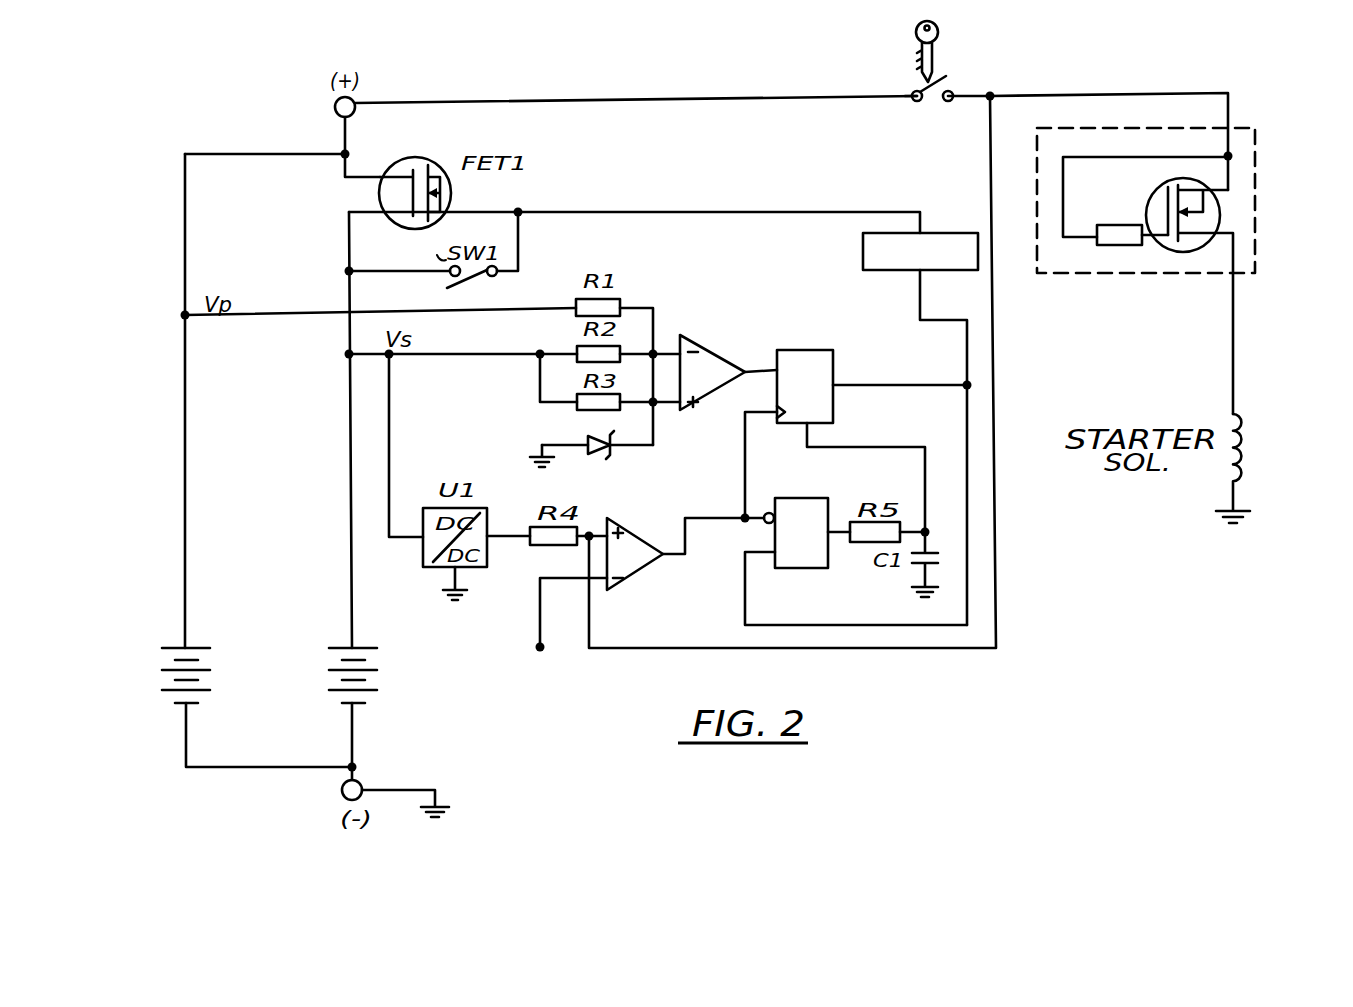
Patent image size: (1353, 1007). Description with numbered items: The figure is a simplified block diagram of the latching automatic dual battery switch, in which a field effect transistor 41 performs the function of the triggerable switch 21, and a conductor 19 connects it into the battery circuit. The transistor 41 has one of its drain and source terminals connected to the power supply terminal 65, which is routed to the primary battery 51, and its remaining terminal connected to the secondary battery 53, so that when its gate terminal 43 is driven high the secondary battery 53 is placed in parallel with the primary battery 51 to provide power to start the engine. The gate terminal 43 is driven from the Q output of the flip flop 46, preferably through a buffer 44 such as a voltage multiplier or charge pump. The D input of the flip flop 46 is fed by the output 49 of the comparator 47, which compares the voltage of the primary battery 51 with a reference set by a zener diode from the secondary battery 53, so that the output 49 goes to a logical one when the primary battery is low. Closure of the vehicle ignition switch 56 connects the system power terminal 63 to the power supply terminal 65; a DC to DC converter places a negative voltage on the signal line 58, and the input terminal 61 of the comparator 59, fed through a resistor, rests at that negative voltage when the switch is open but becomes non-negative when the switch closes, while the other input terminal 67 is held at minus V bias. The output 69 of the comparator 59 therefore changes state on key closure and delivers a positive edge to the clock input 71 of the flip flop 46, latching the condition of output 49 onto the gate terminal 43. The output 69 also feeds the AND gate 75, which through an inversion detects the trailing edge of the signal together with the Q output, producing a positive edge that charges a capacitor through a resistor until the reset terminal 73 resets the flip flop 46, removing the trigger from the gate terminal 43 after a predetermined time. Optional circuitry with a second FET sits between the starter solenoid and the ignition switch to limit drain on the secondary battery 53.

The conductor to secondary battery and FET1 source 19 is at (348, 237).
The triggerable switch 21 is at (591, 436).
The field effect transistor 41 is at (432, 162).
The gate terminal 43 is at (455, 209).
The buffer 44 is at (862, 240).
The flip flop 46 is at (833, 353).
The comparator 47 is at (697, 338).
The comparator output 49 is at (750, 368).
The primary battery 51 is at (212, 682).
The secondary battery 53 is at (380, 682).
The vehicle ignition switch 56 is at (950, 84).
The signal line 58 is at (508, 540).
The comparator 59 is at (640, 566).
The input terminal 61 is at (591, 532).
The system power terminal 63 is at (951, 102).
The power supply terminal 65 is at (912, 100).
The input terminal 67 is at (600, 580).
The comparator output 69 is at (700, 518).
The clock input 71 is at (762, 414).
The reset terminal 73 is at (805, 425).
The AND gate 75 is at (803, 569).